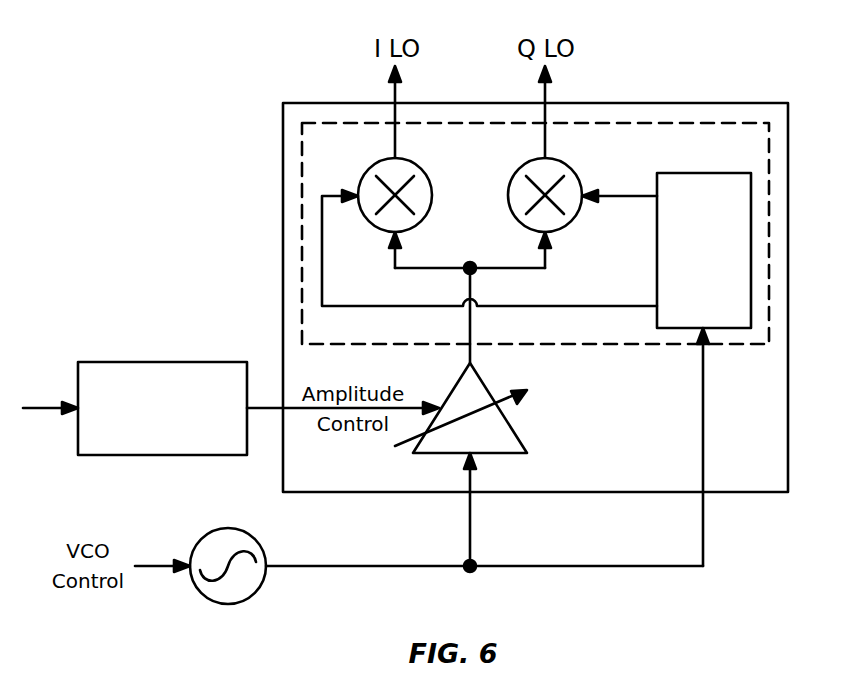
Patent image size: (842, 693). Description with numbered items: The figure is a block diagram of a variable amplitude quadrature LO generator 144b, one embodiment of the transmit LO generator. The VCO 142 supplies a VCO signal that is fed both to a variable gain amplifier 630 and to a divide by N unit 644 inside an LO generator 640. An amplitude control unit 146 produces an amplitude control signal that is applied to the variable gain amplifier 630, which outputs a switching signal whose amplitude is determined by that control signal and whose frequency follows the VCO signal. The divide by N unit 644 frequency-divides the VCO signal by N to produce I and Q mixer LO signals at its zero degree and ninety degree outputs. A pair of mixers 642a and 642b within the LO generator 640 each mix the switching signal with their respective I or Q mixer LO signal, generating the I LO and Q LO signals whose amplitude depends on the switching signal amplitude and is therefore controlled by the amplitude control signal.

The variable amplitude quadrature LO generator 144b is at (683, 89).
The LO generator 640 is at (612, 344).
The mixer 642a is at (443, 162).
The mixer 642b is at (593, 162).
The divide by N unit 644 is at (698, 173).
The variable gain amplifier 630 is at (515, 434).
The amplitude control unit 146 is at (157, 362).
The VCO 142 is at (223, 529).